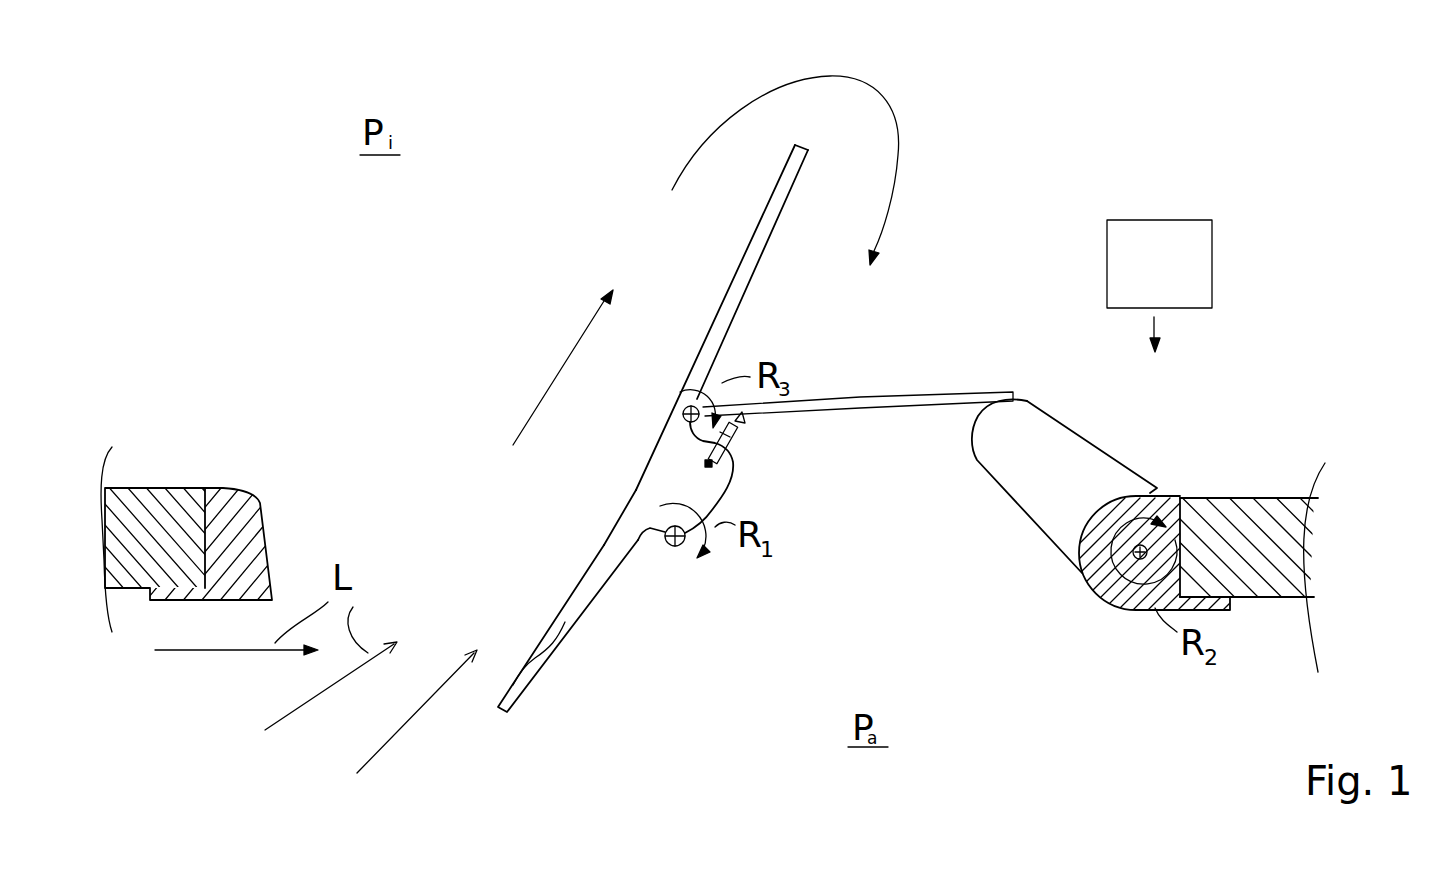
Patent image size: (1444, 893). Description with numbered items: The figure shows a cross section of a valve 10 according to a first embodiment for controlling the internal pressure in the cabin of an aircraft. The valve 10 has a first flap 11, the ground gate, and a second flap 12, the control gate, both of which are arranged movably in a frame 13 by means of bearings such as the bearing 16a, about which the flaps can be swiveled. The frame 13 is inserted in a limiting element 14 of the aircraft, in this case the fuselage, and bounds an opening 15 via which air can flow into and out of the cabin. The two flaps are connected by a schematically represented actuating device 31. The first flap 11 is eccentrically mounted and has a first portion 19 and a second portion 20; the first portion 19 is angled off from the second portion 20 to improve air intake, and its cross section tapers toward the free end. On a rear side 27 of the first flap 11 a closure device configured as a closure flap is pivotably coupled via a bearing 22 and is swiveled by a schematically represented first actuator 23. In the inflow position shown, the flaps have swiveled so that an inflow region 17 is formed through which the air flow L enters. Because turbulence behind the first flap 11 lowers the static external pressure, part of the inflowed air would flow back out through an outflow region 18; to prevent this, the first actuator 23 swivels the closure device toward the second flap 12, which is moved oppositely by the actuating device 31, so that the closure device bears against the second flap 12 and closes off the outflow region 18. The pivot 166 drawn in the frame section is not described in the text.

The valve 10 is at (955, 312).
The first flap 11 is at (624, 481).
The second flap 12 is at (1088, 420).
The frame 13 is at (1160, 505).
The limiting element 14 is at (165, 497).
The opening 15 is at (371, 466).
The bearing 16a is at (665, 548).
The pivot axis of actuating roller 166 is at (1124, 605).
The inflow region 17 is at (502, 551).
The outflow region 18 is at (886, 549).
The first portion 19 is at (565, 622).
The second portion 20 is at (731, 291).
The bearing 22 is at (683, 407).
The first actuator 23 is at (740, 435).
The rear side 27 is at (754, 272).
The actuating device 31 is at (1159, 286).